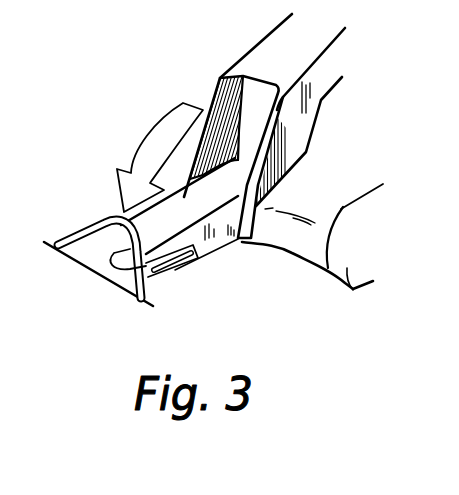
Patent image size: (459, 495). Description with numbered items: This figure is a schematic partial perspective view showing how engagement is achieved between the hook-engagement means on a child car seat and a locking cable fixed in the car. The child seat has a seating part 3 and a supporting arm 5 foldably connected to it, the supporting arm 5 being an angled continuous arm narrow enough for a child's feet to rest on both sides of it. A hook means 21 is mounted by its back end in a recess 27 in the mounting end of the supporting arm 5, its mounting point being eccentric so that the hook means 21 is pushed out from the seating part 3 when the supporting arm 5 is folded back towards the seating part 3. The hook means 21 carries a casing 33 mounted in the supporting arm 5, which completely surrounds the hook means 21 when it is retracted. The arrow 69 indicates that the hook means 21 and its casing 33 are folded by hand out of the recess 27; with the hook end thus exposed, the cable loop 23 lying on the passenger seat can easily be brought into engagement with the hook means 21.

The seating part 3 is at (342, 208).
The supporting arm 5 is at (312, 113).
The hook means 21 is at (174, 264).
The loop 23 is at (95, 218).
The recess 27 is at (227, 73).
The casing 33 is at (220, 237).
The arrow 69 is at (156, 149).